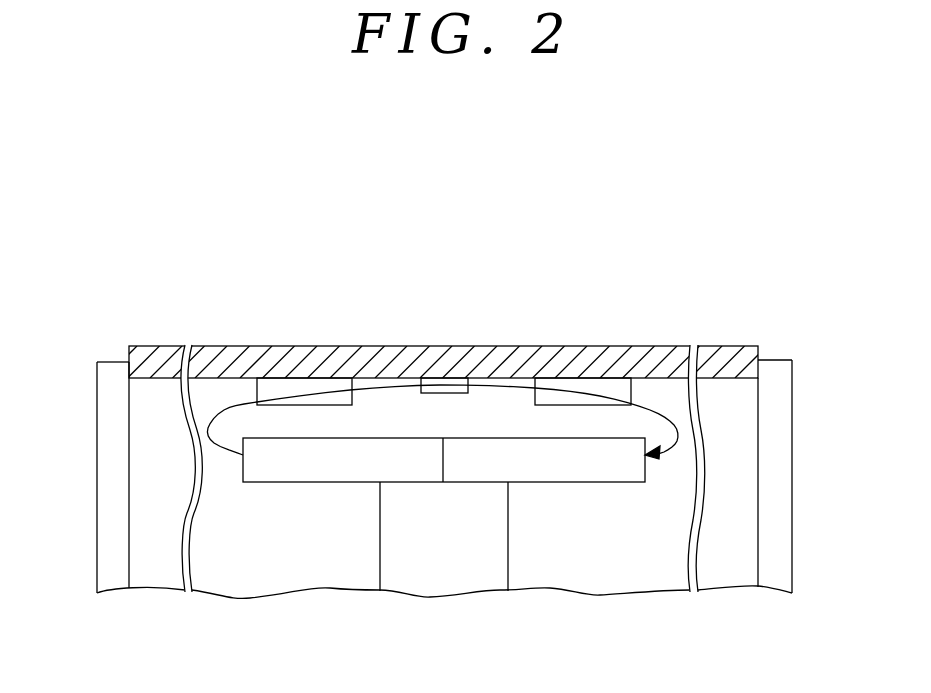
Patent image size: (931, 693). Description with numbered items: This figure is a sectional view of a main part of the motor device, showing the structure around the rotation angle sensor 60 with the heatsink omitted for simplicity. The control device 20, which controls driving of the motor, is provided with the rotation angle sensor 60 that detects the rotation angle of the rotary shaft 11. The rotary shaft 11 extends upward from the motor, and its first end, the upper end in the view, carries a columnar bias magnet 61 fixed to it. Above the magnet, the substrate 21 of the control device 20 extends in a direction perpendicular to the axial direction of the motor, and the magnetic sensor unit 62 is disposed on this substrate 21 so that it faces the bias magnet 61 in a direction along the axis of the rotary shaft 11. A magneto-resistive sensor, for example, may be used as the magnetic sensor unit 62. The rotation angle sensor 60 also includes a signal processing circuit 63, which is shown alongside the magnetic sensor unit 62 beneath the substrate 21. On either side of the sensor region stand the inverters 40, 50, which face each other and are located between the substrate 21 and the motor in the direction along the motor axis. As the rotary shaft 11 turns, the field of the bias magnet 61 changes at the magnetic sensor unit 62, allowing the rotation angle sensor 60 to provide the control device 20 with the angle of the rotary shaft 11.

The rotary shaft 11 is at (508, 537).
The control device 20 is at (447, 326).
The substrate 21 is at (654, 356).
The inverter 40 is at (792, 400).
The inverter 50 is at (97, 394).
The rotation angle sensor 60 is at (444, 376).
The bias magnet 61 is at (562, 306).
The magnetic sensor unit 62 is at (443, 382).
The signal processing circuit 63 is at (275, 386).